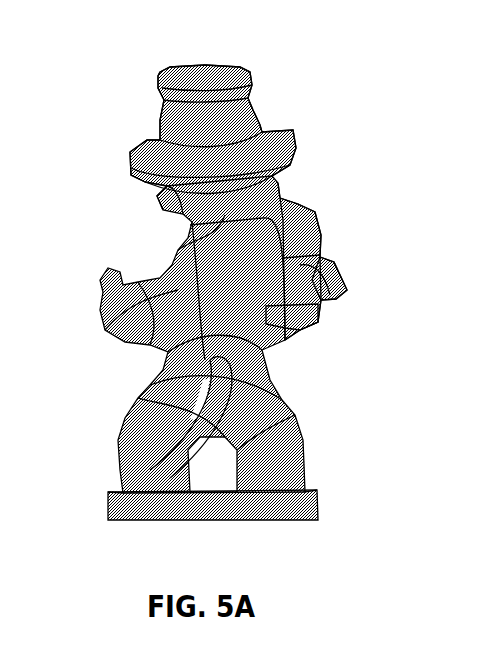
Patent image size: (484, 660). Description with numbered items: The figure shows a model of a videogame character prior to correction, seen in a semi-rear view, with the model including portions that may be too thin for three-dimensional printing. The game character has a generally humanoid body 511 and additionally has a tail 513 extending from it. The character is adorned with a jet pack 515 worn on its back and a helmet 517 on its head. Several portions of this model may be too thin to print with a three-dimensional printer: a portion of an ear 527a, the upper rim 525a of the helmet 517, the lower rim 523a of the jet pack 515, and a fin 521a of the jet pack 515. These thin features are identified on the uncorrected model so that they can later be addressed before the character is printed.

The humanoid body 511 is at (96, 239).
The tail 513 is at (205, 452).
The jet pack 515 is at (326, 202).
The helmet 517 is at (116, 111).
The fin 521a is at (334, 272).
The lower rim 523a is at (298, 320).
The upper rim 525a is at (212, 68).
The ear 527a is at (162, 207).